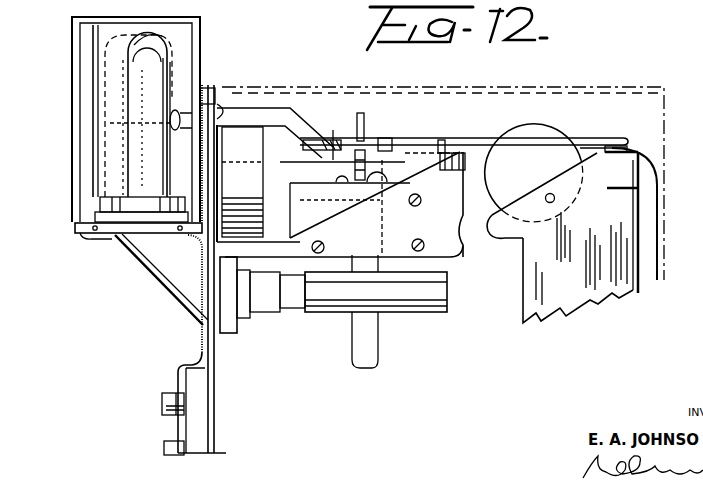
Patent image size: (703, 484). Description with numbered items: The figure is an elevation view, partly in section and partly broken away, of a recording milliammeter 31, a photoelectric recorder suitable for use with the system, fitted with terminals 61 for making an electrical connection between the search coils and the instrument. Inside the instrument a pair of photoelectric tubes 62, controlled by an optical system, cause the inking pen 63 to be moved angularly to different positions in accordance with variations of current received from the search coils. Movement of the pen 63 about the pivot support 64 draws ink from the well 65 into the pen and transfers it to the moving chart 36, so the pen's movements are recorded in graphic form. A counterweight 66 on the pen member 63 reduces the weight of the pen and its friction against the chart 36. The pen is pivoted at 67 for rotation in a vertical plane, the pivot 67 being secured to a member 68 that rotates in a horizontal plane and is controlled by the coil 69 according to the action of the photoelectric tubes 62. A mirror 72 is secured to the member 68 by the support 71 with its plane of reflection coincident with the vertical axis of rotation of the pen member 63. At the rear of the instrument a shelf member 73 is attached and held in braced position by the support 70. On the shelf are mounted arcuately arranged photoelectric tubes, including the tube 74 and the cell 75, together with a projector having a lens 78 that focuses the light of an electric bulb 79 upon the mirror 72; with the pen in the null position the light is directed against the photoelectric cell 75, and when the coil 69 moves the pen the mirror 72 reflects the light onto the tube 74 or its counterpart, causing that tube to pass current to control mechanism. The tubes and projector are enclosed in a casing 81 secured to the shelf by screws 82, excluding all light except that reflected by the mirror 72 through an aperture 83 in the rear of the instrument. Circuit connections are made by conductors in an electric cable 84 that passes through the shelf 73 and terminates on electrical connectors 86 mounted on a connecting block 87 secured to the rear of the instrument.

The recording milliammeter 31 is at (579, 86).
The moving chart 36 is at (662, 203).
The terminals 61 is at (164, 447).
The photoelectric tubes 62 is at (440, 313).
The pen 63 is at (546, 137).
The pivot support 64 is at (392, 138).
The ink well 65 is at (470, 148).
The counterweight 66 is at (308, 150).
The pivot 67 is at (390, 140).
The member 68 is at (280, 168).
The coil 69 is at (387, 227).
The support 70 is at (156, 283).
The support 71 is at (359, 147).
The mirror 72 is at (356, 118).
The shelf member 73 is at (112, 240).
The photoelectric tube 74 is at (170, 52).
The photoelectric cell 75 is at (120, 119).
The lens 78 is at (180, 128).
The electric bulb 79 is at (115, 128).
The casing 81 is at (107, 116).
The screws 82 is at (78, 237).
The aperture 83 is at (196, 100).
The electric cable 84 is at (200, 267).
The electrical connectors 86 is at (170, 421).
The connecting block 87 is at (200, 447).